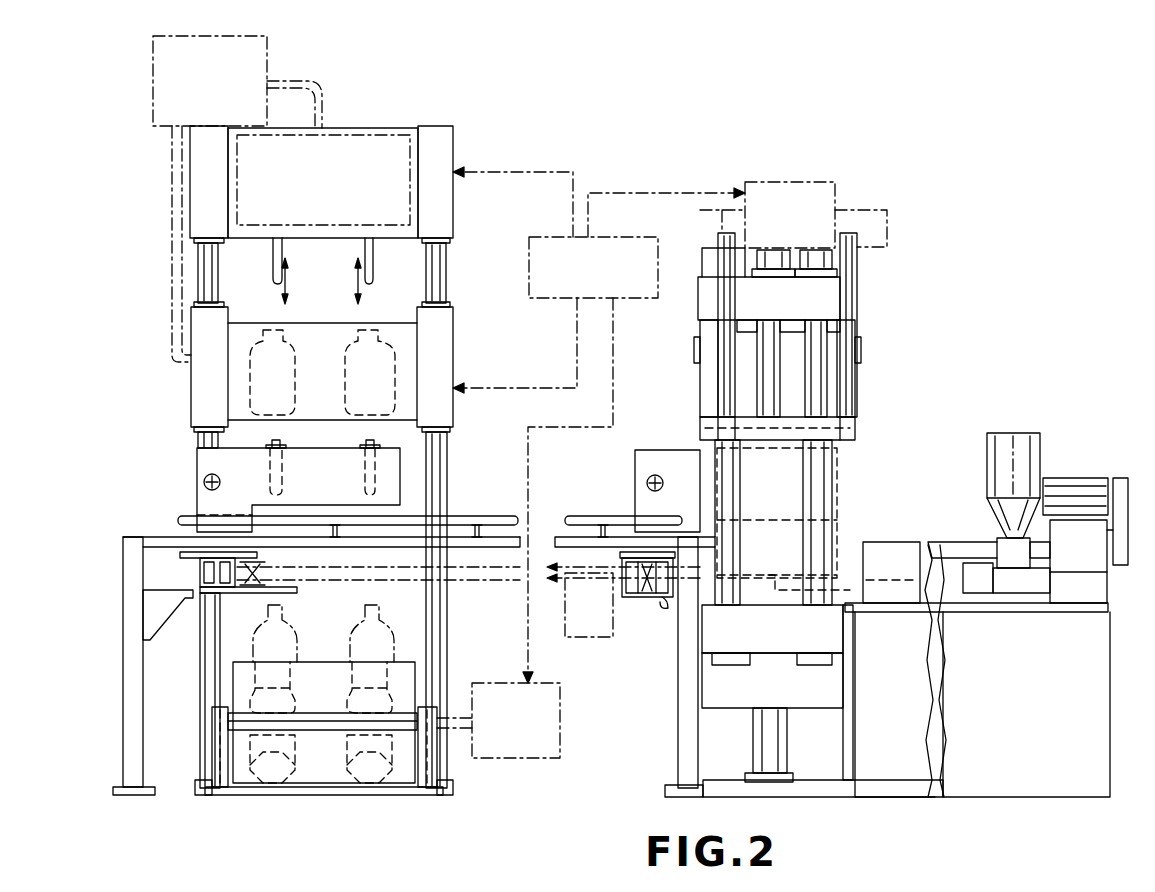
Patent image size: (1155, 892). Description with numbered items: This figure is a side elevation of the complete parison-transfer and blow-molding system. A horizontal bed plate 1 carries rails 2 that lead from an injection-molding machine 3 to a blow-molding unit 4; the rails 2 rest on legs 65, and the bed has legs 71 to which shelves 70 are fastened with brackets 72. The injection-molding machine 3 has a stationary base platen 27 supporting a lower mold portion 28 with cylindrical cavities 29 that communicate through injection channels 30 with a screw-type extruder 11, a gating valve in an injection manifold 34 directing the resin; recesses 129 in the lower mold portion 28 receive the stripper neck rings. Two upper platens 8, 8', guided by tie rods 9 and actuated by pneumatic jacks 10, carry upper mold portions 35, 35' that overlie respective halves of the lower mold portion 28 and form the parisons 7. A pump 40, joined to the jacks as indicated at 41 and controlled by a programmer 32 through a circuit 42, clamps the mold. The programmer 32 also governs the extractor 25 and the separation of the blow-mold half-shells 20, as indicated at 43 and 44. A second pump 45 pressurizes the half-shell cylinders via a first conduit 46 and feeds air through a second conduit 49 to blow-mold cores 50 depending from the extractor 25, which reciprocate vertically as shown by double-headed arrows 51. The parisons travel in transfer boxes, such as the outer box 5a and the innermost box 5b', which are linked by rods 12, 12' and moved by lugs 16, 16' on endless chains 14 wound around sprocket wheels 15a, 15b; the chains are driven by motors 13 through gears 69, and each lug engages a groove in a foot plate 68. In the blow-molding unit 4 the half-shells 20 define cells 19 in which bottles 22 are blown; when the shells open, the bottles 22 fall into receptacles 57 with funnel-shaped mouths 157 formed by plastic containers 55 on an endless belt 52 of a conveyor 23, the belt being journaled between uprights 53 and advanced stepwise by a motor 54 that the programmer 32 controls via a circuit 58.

The horizontal bed plate 1 is at (562, 540).
The rails 2 is at (494, 516).
The injection-molding machine 3 is at (918, 266).
The blow-molding unit 4 is at (180, 437).
The outer transfer box 5a is at (214, 458).
The innermost transfer box 5b' is at (667, 475).
The parisons 7 is at (366, 444).
The upper platen 8 is at (798, 420).
The upper platen 8' is at (796, 368).
The tie rods 9 is at (810, 375).
The pneumatic jacks 10 is at (718, 293).
The screw-type extruder 11 is at (958, 442).
The rod 12 is at (164, 489).
The rod 12' is at (623, 471).
The motor 13 is at (583, 637).
The endless chain 14 is at (462, 568).
The sprocket wheel 15a is at (285, 590).
The sprocket wheel 15b is at (215, 590).
The projecting lug 16 is at (194, 572).
The projecting lug 16' is at (637, 540).
The blow-molding cells 19 is at (270, 345).
The half-shells 20 is at (236, 380).
The bottles 22 is at (352, 646).
The conveyor 23 is at (355, 796).
The extractor 25 is at (388, 155).
The stationary base platen 27 is at (778, 640).
The lower mold portion 28 is at (767, 560).
The cavities 29 is at (725, 540).
The injection channels 30 is at (785, 572).
The programmer 32 is at (529, 275).
The injection manifold 34 is at (793, 592).
The upper mold portion 35 is at (800, 513).
The upper mold portion 35' is at (671, 368).
The pump 40 is at (806, 185).
The connection 41 is at (712, 207).
The circuit 42 is at (728, 182).
The extractor control indication 43 is at (570, 208).
The half-shell separation control indication 44 is at (575, 342).
The pump 45 is at (253, 56).
The first conduit 46 is at (172, 226).
The second conduit 49 is at (330, 110).
The blow-mold cores 50 is at (365, 257).
The double-headed arrows 51 is at (345, 290).
The endless belt 52 is at (233, 718).
The uprights 53 is at (215, 770).
The motor 54 is at (530, 758).
The plastic containers 55 is at (320, 748).
The receptacles 57 is at (430, 697).
The circuit 58 is at (525, 462).
The legs 65 is at (466, 525).
The foot plate 68 is at (190, 555).
The gears 69 is at (670, 603).
The shelves 70 is at (297, 592).
The legs 71 is at (690, 740).
The brackets 72 is at (162, 620).
The recesses 129 is at (800, 515).
The funnel-shaped mouths 157 is at (400, 665).